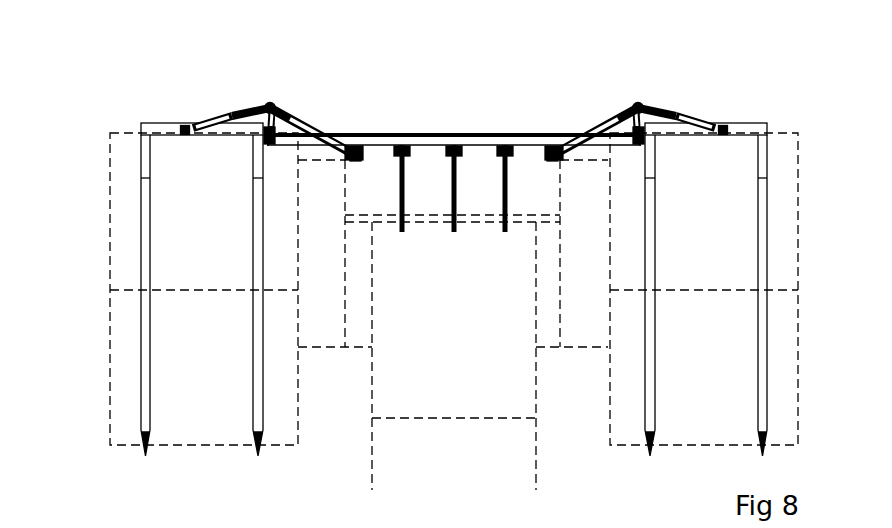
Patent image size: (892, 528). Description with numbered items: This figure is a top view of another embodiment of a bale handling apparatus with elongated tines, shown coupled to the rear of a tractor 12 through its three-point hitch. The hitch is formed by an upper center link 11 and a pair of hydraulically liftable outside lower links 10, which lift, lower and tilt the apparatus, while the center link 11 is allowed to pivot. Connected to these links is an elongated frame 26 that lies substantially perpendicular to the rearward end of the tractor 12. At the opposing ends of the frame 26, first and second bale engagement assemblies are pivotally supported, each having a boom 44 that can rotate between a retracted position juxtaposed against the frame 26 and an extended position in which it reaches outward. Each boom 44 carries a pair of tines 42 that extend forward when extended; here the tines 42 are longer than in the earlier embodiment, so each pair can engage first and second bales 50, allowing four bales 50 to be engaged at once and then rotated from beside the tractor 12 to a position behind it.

The lower link 10 is at (400, 193).
The upper center link 11 is at (458, 183).
The tractor 12 is at (439, 340).
The elongated frame 26 is at (440, 135).
The tine 42 is at (255, 375).
The boom 44 is at (163, 122).
The bale 50 is at (110, 210).